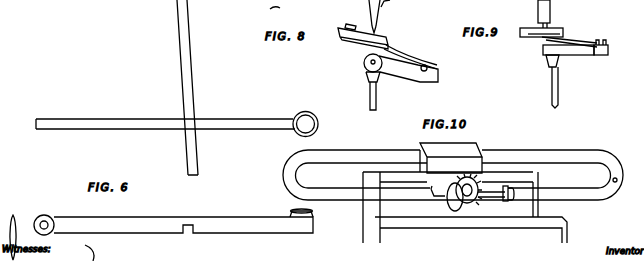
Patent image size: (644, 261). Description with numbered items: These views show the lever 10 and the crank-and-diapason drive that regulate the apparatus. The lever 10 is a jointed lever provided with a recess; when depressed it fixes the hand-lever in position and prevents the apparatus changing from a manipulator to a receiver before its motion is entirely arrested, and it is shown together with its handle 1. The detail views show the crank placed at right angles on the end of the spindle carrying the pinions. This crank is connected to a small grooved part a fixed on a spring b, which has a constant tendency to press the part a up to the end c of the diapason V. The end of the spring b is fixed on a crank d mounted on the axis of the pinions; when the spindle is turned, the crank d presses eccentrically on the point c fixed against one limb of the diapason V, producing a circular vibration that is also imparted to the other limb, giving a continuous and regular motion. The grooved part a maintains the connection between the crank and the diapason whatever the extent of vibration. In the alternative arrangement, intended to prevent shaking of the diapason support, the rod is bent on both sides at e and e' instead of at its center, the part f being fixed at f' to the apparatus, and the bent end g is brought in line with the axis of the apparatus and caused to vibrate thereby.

In FIG. 6, the handle 1 is at (187, 87).
In FIG. 6, the lever 10 is at (176, 173).
In FIG. 8, the small grooved part a is at (365, 38).
In FIG. 9, the small grooved part a is at (541, 28).
In FIG. 8, the spring b is at (410, 57).
In FIG. 9, the spring b is at (569, 38).
In FIG. 8, the end of the diapason c is at (353, 24).
In FIG. 9, the end of the diapason c is at (543, 26).
In FIG. 10, the end of the diapason c is at (454, 175).
In FIG. 8, the crank d is at (401, 82).
In FIG. 9, the crank d is at (568, 76).
In FIG. 8, the bent side of diapason rod e is at (425, 64).
In FIG. 9, the bent side of diapason rod e is at (601, 47).
In FIG. 10, the bent side of diapason rod e is at (429, 193).
In FIG. 10, the bent side of diapason rod e' is at (513, 193).
In FIG. 10, the fixed part of diapason f is at (414, 161).
In FIG. 10, the fixing point f' is at (451, 158).
In FIG. 10, the bent end of diapason g is at (476, 182).
In FIG. 9, the diapason V is at (544, 14).